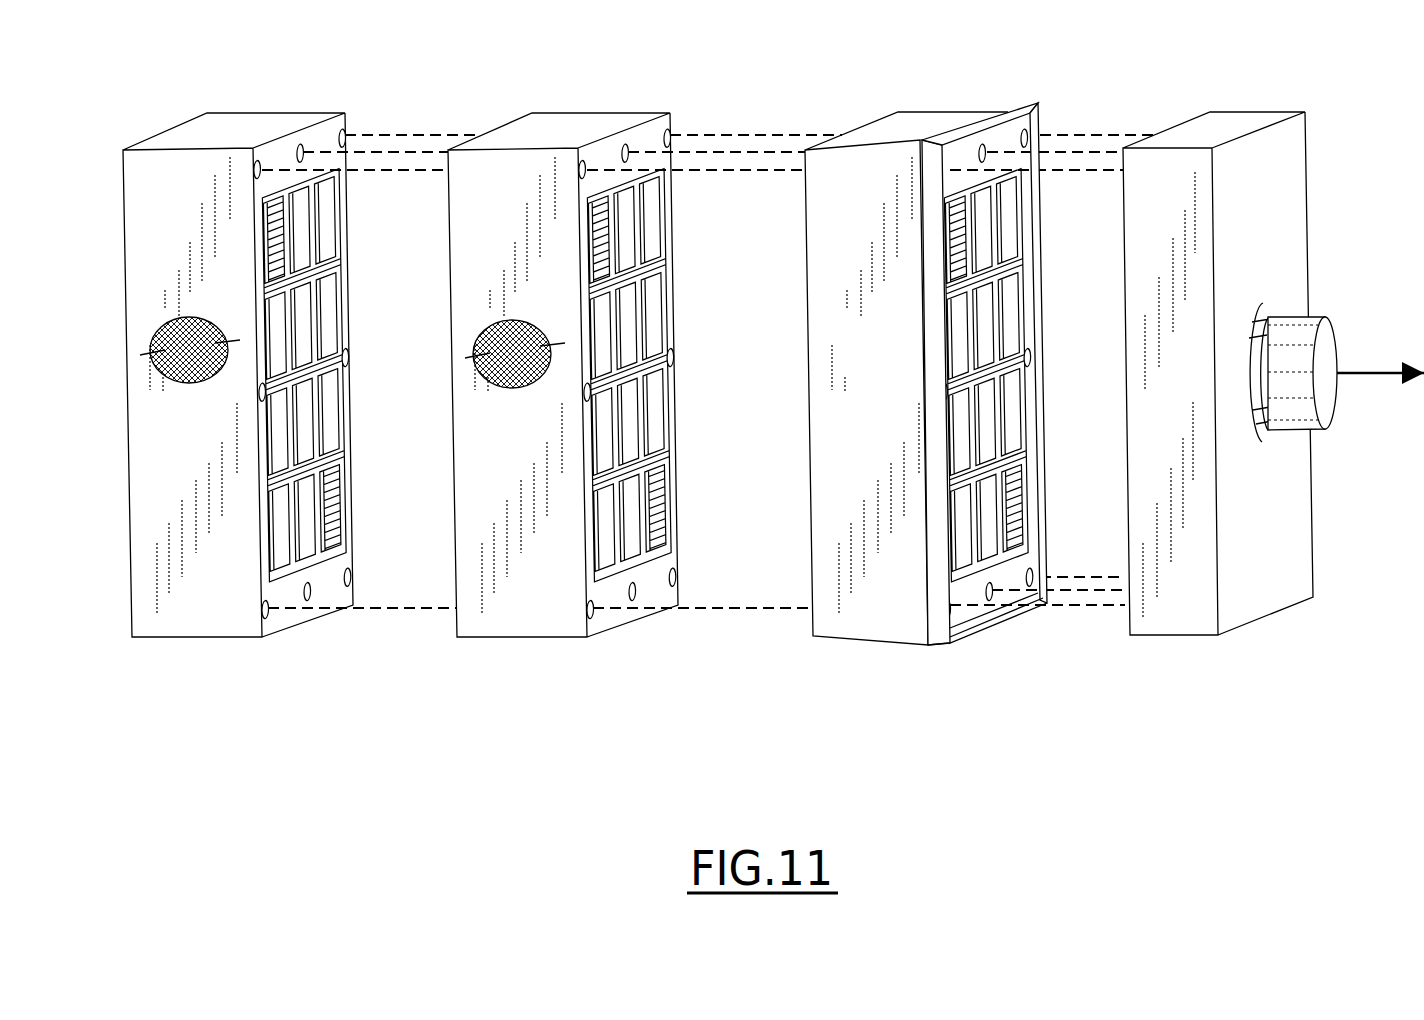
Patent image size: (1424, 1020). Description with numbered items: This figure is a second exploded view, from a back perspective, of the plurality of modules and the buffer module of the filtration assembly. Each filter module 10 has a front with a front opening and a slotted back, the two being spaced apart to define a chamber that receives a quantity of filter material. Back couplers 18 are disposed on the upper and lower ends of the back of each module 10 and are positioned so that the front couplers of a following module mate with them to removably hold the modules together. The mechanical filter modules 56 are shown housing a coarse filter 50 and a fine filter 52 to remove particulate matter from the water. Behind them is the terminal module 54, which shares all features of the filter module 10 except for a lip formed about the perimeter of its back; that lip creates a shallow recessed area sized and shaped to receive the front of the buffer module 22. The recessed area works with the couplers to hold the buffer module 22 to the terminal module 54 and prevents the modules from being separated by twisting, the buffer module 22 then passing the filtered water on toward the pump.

The filter module 10 is at (241, 329).
The back couplers 18 is at (990, 592).
The buffer module 22 is at (1243, 118).
The coarse filter 50 is at (165, 323).
The fine filter 52 is at (490, 378).
The terminal module 54 is at (813, 429).
The mechanical filter modules 56 is at (386, 398).